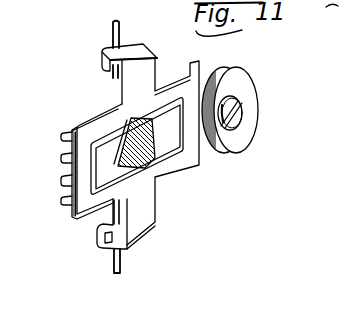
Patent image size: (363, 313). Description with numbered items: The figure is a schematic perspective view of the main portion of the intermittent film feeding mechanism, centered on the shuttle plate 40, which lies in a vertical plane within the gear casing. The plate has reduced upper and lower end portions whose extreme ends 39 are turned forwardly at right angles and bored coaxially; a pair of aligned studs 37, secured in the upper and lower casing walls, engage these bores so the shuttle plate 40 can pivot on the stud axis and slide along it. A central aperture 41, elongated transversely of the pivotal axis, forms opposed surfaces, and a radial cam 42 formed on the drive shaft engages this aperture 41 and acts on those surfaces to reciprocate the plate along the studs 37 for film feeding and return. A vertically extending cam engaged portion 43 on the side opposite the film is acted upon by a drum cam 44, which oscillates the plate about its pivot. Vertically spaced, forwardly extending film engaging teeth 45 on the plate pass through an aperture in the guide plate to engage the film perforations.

The studs 37 is at (112, 36).
The extreme ends 39 is at (102, 56).
The plate 40 is at (135, 153).
The central aperture 41 is at (178, 153).
The radial cam 42 is at (130, 136).
The cam engaged portion 43 is at (201, 164).
The drum cam 44 is at (248, 100).
The film engaging teeth 45 is at (62, 158).